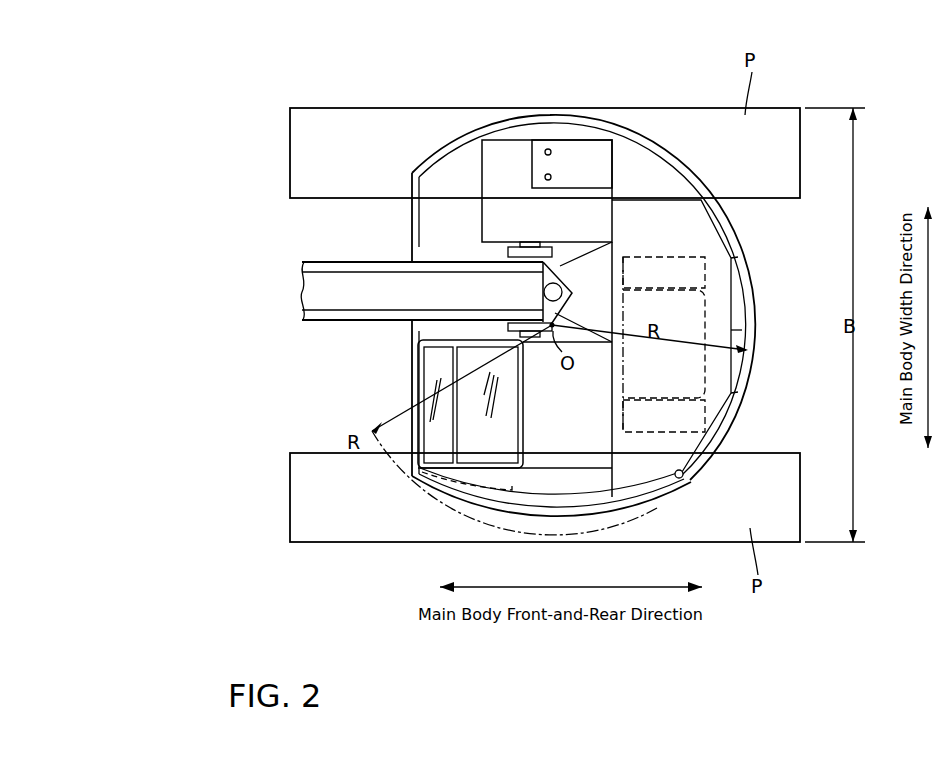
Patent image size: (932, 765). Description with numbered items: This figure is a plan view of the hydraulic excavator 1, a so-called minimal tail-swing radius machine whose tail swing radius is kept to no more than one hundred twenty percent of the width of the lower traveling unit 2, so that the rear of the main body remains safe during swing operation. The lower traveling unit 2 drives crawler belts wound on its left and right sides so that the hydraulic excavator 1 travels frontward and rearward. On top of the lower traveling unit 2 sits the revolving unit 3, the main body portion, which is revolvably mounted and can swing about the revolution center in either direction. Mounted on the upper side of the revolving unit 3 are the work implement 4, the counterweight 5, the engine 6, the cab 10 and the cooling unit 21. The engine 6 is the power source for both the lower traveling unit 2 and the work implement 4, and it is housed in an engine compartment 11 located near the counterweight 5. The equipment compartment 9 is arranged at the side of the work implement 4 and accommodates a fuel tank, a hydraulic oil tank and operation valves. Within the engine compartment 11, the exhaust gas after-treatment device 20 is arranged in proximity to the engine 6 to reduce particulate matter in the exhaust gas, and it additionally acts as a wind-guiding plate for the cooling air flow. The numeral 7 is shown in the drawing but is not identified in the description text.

The hydraulic excavator 1 is at (185, 80).
The lower traveling unit 2 is at (265, 143).
The revolving unit 3 is at (650, 468).
The work implement 4 is at (378, 262).
The counterweight 5 is at (753, 297).
The engine 6 is at (712, 365).
The lower frame member 7 is at (465, 482).
The equipment compartment 9 is at (571, 158).
The cab 10 is at (418, 378).
The engine compartment 11 is at (722, 325).
The exhaust gas after-treatment device 20 is at (705, 272).
The cooling unit 21 is at (705, 413).